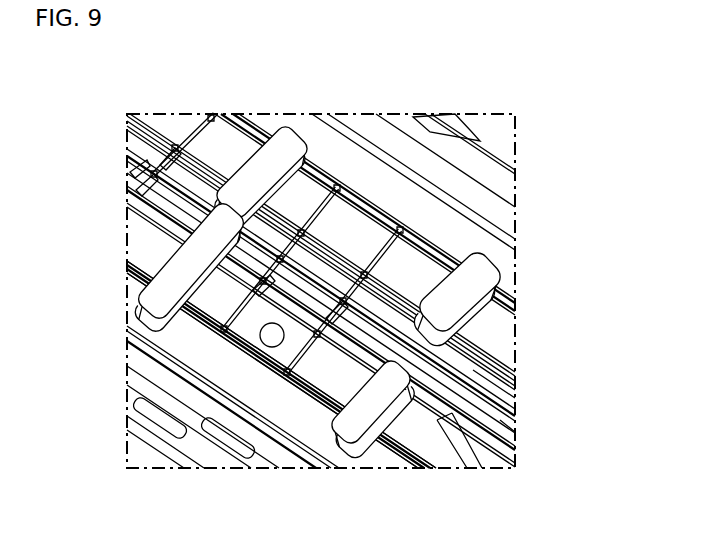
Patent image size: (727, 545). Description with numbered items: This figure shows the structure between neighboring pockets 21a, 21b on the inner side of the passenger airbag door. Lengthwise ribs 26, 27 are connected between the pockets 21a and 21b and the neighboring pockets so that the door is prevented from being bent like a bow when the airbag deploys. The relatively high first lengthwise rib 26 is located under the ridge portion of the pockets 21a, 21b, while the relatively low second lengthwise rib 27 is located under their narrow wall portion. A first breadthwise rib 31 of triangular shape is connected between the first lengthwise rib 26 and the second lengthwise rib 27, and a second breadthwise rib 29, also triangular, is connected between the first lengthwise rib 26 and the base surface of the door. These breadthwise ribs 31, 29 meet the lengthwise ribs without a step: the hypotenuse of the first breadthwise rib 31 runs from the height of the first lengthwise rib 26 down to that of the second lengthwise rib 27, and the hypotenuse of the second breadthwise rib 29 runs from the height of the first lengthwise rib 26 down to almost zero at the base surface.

The pocket 21a is at (180, 272).
The pocket 21b is at (210, 116).
The first lengthwise rib 26 is at (322, 243).
The second lengthwise rib 27 is at (385, 240).
The second breadthwise rib 29 is at (283, 222).
The first breadthwise rib 31 is at (308, 215).